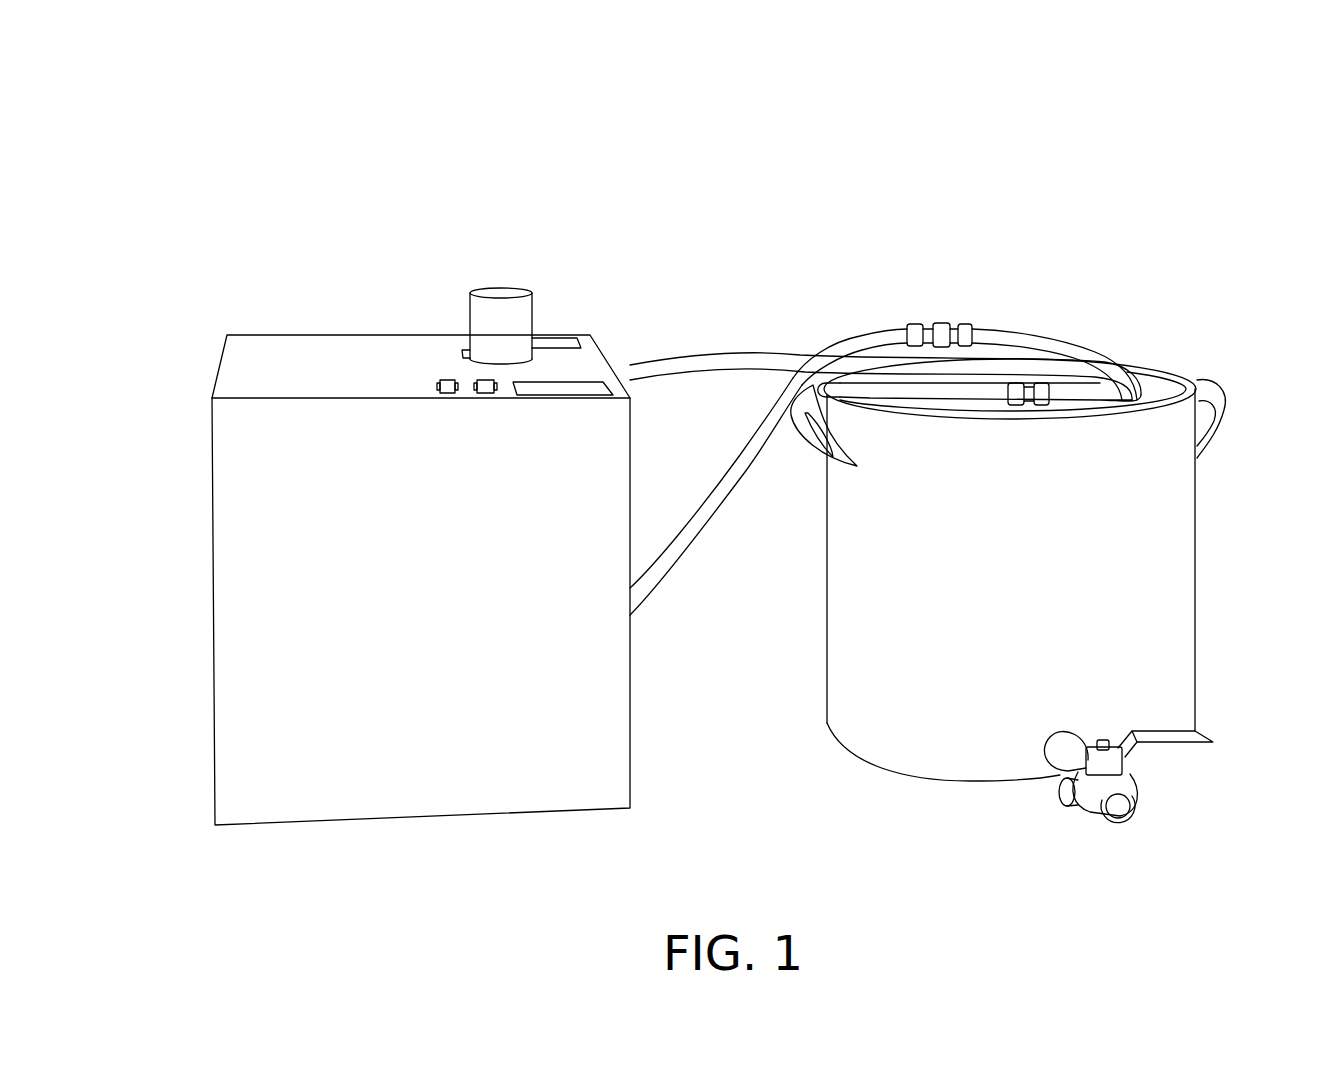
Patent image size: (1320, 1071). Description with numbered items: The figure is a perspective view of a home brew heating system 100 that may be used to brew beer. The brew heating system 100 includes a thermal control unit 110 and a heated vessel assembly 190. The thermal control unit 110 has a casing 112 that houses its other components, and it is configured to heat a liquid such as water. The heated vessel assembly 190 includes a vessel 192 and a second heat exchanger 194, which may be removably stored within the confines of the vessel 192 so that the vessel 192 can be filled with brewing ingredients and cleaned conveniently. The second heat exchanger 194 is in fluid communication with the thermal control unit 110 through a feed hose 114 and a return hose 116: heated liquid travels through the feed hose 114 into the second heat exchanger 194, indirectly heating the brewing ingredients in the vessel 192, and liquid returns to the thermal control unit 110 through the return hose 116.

The brew heating system 100 is at (198, 142).
The thermal control unit 110 is at (181, 283).
The casing 112 is at (237, 634).
The feed hose 114 is at (672, 368).
The return hose 116 is at (885, 335).
The heated vessel assembly 190 is at (1202, 283).
The vessel 192 is at (1158, 635).
The second heat exchanger 194 is at (1028, 340).